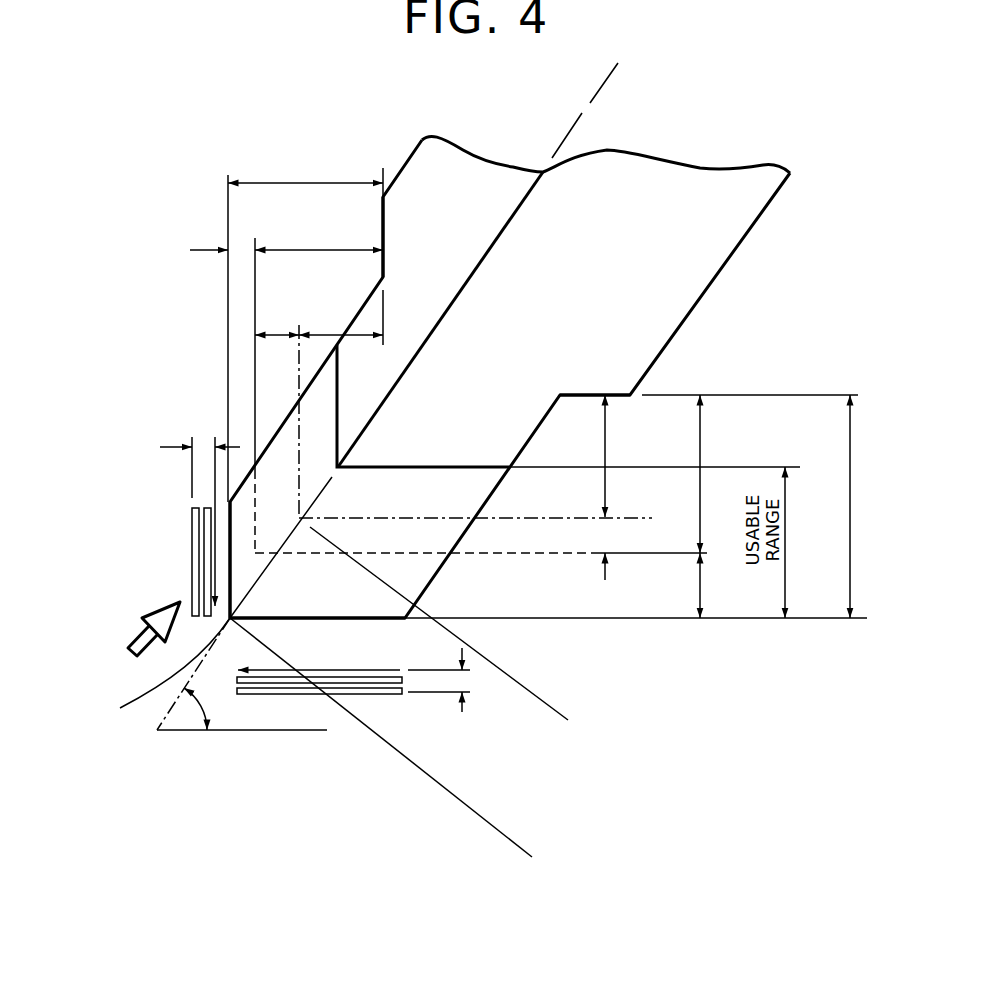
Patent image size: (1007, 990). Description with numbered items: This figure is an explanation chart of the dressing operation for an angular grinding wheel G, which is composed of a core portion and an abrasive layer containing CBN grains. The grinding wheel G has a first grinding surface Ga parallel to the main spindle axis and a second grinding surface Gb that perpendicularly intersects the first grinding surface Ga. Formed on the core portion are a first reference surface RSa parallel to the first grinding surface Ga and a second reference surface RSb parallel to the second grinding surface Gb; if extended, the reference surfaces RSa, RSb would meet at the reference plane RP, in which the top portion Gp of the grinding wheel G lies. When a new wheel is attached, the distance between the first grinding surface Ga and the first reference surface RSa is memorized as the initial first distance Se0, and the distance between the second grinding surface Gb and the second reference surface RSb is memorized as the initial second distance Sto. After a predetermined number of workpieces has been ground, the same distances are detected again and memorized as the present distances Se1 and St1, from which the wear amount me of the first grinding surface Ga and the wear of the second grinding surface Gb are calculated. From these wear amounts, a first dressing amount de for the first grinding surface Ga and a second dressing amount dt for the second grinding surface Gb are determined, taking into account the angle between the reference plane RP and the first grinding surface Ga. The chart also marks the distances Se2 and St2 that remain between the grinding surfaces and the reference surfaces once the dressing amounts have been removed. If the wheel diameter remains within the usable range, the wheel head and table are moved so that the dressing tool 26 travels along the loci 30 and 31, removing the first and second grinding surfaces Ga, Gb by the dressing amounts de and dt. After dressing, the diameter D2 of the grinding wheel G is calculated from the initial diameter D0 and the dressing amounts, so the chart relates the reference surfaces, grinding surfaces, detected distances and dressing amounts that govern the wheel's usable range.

The grinding wheel G is at (725, 235).
The reference plane RP is at (598, 90).
The first reference surface RSa is at (576, 389).
The second reference surface RSb is at (386, 264).
The first grinding surface Ga is at (320, 620).
The second grinding surface Gb is at (233, 557).
The top portion Gp is at (207, 599).
The dressing tool 26 is at (132, 624).
The locus 30 is at (380, 696).
The locus 31 is at (192, 520).
The initial second distance Sto is at (305, 168).
The present second distance St1 is at (319, 235).
The width dimension 2 St2 is at (341, 320).
The margin thickness mt is at (238, 250).
The second dressing amount dt is at (278, 334).
The initial first distance Se0 is at (836, 506).
The present first distance Se1 is at (685, 474).
The scanning range 2 Se2 is at (587, 456).
The first dressing amount de is at (506, 622).
The wear amount me is at (714, 585).
The diameter after dressing D2 is at (605, 652).
The initial diameter D0 is at (620, 720).